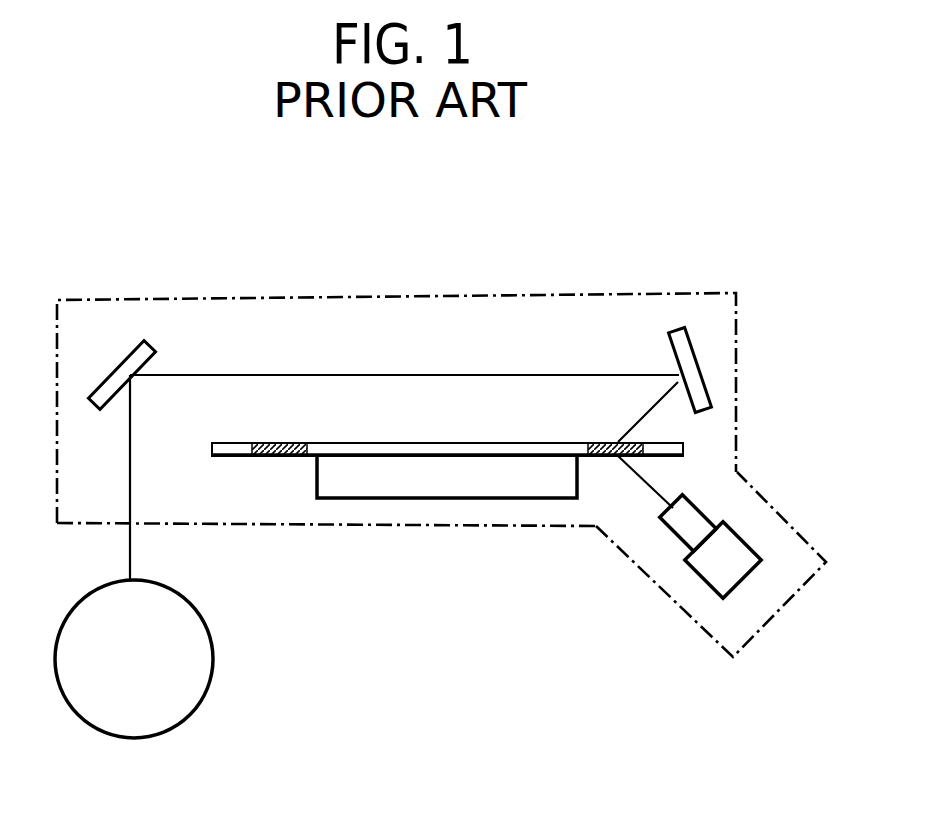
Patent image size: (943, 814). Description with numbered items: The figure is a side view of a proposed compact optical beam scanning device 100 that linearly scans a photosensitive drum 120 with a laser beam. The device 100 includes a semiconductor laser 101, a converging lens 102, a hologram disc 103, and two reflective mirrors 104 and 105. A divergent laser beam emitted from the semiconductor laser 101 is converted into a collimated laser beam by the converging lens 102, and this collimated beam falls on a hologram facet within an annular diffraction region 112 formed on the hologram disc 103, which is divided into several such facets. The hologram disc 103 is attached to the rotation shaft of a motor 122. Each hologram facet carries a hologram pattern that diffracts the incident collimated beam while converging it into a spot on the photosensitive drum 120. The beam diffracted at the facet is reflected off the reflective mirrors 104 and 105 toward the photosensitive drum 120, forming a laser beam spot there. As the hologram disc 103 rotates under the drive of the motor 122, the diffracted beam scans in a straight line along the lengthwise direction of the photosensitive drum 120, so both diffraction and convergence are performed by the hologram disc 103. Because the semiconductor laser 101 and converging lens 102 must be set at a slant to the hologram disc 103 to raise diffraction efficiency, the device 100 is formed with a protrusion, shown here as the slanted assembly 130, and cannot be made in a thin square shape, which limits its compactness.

The optical beam scanning device 100 is at (655, 284).
The semiconductor laser 101 is at (710, 566).
The converging lens 102 is at (688, 520).
The hologram disc 103 is at (437, 443).
The reflective mirror 104 is at (690, 351).
The reflective mirror 105 is at (115, 366).
The annular diffraction region 112 is at (597, 457).
The photosensitive drum 120 is at (193, 652).
The motor 122 is at (435, 485).
The imaging unit 130 is at (790, 600).